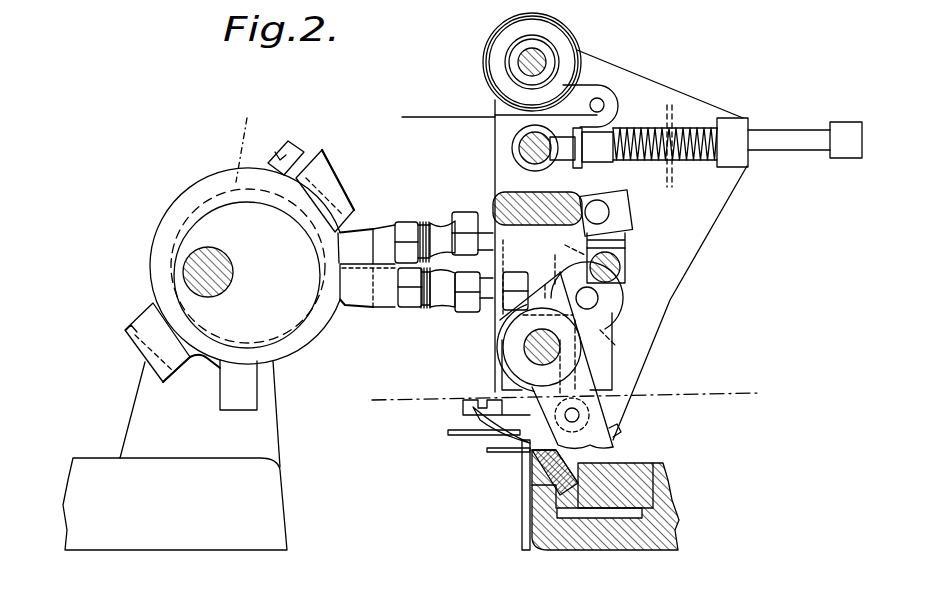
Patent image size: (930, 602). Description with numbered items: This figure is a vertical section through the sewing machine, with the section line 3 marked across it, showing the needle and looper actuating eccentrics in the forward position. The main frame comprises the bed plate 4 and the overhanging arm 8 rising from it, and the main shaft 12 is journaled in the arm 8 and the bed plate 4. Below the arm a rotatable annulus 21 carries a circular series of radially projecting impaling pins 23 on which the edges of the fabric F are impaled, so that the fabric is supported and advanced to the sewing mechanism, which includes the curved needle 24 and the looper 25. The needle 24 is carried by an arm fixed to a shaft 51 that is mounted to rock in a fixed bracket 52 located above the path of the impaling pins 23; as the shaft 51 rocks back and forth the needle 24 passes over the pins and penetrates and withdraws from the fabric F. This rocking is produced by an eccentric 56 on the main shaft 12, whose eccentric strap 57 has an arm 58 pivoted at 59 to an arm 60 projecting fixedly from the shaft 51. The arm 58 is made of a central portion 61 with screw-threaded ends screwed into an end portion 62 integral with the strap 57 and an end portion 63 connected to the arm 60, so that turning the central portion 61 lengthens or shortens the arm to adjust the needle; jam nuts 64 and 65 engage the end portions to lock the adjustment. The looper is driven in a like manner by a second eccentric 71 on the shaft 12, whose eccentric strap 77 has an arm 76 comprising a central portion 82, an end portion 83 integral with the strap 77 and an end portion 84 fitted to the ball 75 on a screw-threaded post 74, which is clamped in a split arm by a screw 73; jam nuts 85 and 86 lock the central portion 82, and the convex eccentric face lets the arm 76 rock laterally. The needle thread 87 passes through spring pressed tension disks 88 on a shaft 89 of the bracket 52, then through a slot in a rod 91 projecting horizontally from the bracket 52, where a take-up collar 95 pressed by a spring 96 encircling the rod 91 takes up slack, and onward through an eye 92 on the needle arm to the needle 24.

The section line 3— 3 is at (567, 399).
The bed plate 4 is at (237, 540).
The overhanging arm 8 is at (270, 450).
The main shaft 12 is at (200, 268).
The annulus 21 is at (630, 540).
The impaling pins 23 is at (492, 455).
The needle 24 is at (460, 420).
The looper 25 is at (452, 448).
The shaft 51 is at (524, 356).
The bracket 52 is at (515, 145).
The eccentric 56 is at (298, 318).
The eccentric strap 57 is at (176, 218).
The arm 58 is at (440, 308).
The pivot 59 is at (600, 298).
The arm 60 is at (612, 312).
The central portion 61 is at (462, 312).
The end portion 62 is at (372, 310).
The end portion 63 is at (548, 278).
The jam nut 64 is at (408, 308).
The jam nut 65 is at (510, 300).
The eccentric 71 is at (239, 244).
The screw 73 is at (620, 270).
The screw-threaded post 74 is at (625, 240).
The ball 75 is at (612, 212).
The arm 76 is at (465, 212).
The eccentric strap 77 is at (206, 182).
The central portion 82 is at (442, 222).
The end portion 83 is at (405, 222).
The end portion 84 is at (605, 192).
The jam nut 85 is at (404, 222).
The jam nut 86 is at (500, 192).
The needle thread 87 is at (447, 117).
The tension disks 88 is at (500, 90).
The shaft 89 is at (520, 60).
The rod 91 is at (790, 150).
The eye 92 is at (616, 430).
The take-up collar 95 is at (738, 120).
The spring 96 is at (652, 130).
The fabric F is at (521, 523).